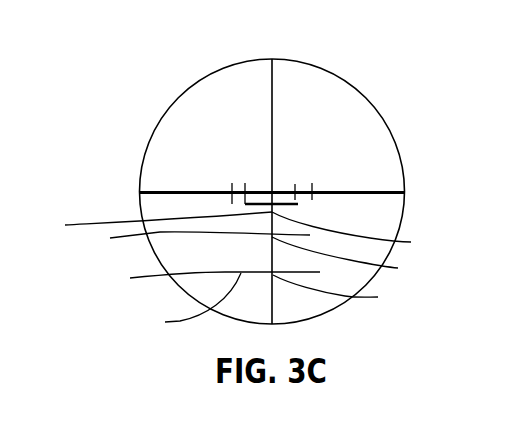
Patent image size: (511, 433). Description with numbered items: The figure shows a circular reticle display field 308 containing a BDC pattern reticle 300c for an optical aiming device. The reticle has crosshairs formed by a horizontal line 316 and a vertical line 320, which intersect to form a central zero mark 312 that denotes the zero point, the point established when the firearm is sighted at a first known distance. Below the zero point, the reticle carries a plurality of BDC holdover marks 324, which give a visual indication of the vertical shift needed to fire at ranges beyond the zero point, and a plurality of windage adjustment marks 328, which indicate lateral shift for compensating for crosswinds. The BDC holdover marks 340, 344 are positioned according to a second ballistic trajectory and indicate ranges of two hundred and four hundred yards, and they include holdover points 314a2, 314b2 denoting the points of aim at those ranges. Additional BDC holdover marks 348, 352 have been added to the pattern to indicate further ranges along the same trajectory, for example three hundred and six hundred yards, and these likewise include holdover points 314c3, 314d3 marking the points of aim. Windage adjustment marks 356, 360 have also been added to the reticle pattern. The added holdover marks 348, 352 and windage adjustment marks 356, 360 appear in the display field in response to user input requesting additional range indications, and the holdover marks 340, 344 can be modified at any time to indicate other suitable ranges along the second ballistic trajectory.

The BDC pattern reticle 300c is at (185, 90).
The reticle display field 308 is at (352, 80).
The central zero mark 312 is at (273, 75).
The horizontal line 316 is at (358, 191).
The vertical line 320 is at (270, 90).
The BDC holdover marks 324 is at (180, 305).
The windage adjustment marks 328 is at (245, 184).
The BDC holdover mark 340 is at (245, 204).
The BDC holdover mark 344 is at (191, 245).
The BDC holdover mark 348 is at (148, 225).
The BDC holdover mark 352 is at (205, 281).
The windage adjustment mark 356 is at (232, 184).
The windage adjustment mark 360 is at (312, 184).
The holdover point 314a2 is at (293, 206).
The holdover point 314b2 is at (365, 261).
The holdover point 314c3 is at (372, 234).
The holdover point 314d3 is at (359, 294).